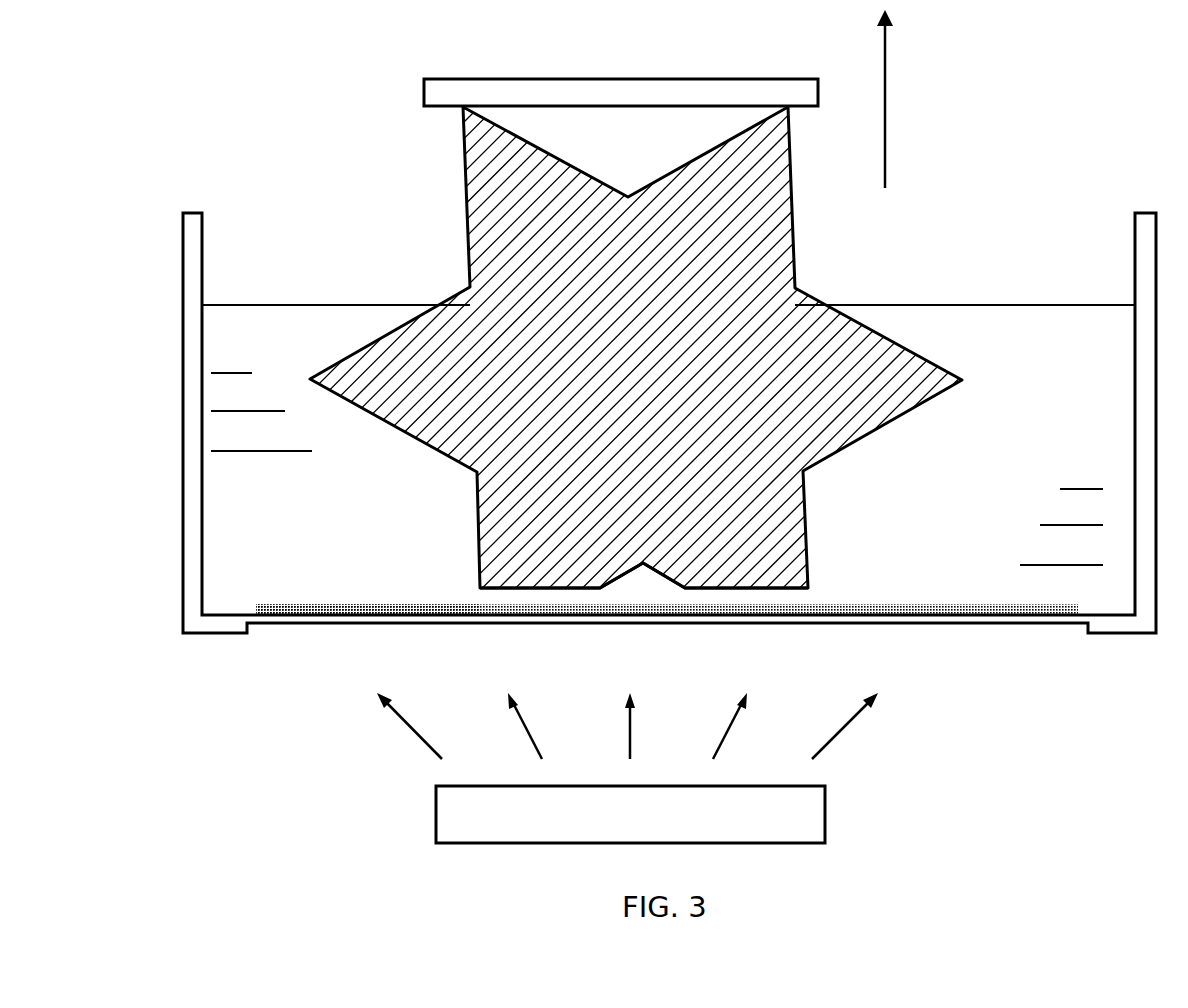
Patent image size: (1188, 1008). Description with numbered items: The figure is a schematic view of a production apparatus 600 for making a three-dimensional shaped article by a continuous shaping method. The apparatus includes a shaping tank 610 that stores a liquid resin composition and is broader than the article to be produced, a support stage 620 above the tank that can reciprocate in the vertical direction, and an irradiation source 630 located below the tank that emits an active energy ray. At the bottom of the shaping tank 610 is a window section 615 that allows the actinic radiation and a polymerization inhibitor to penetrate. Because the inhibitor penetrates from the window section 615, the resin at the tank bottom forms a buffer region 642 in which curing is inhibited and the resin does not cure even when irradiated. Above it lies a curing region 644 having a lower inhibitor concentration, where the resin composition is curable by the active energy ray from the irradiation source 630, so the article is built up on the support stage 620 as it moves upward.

The production apparatus 600 is at (95, 76).
The shaping tank 610 is at (193, 210).
The window section 615 is at (907, 620).
The support stage 620 is at (480, 78).
The irradiation source 630 is at (792, 807).
The buffer region 642 is at (392, 608).
The curing region 644 is at (513, 598).